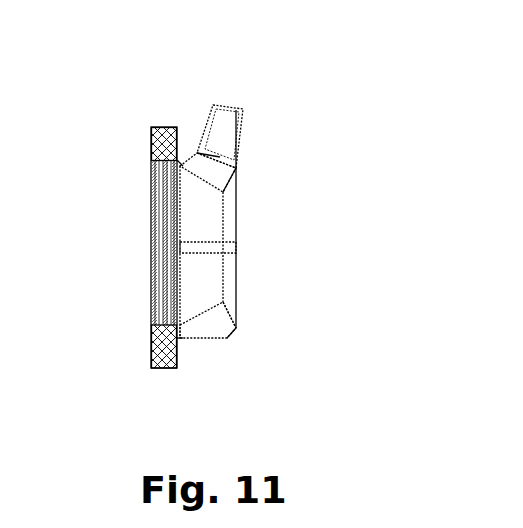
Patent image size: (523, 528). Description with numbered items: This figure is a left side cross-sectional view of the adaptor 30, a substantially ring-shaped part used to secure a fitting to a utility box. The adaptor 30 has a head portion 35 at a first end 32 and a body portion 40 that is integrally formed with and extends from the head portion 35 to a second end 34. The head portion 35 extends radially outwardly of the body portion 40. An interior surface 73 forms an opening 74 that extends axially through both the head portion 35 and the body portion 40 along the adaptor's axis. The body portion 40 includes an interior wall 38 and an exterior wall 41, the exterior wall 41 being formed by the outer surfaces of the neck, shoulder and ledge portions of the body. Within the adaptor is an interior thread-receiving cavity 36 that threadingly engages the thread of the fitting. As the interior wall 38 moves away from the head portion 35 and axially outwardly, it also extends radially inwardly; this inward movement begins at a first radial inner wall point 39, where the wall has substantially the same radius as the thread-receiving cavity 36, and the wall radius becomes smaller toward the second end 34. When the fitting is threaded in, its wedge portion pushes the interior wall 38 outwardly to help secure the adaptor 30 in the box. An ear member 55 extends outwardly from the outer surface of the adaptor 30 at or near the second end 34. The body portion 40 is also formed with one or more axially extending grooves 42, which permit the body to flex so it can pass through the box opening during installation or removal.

The adaptor 30 is at (287, 140).
The first end 32 is at (128, 366).
The second end 34 is at (240, 337).
The head portion 35 is at (163, 133).
The interior thread-receiving cavity 36 is at (153, 297).
The interior wall 38 is at (215, 302).
The first radial inner wall point 39 is at (183, 163).
The body portion 40 is at (203, 337).
The exterior wall 41 is at (203, 160).
The axially extending grooves 42 is at (238, 252).
The ear member 55 is at (247, 112).
The interior surface 73 is at (160, 313).
The opening 74 is at (137, 186).